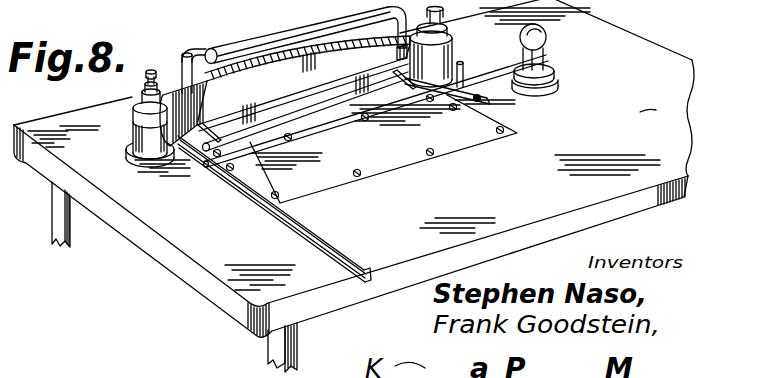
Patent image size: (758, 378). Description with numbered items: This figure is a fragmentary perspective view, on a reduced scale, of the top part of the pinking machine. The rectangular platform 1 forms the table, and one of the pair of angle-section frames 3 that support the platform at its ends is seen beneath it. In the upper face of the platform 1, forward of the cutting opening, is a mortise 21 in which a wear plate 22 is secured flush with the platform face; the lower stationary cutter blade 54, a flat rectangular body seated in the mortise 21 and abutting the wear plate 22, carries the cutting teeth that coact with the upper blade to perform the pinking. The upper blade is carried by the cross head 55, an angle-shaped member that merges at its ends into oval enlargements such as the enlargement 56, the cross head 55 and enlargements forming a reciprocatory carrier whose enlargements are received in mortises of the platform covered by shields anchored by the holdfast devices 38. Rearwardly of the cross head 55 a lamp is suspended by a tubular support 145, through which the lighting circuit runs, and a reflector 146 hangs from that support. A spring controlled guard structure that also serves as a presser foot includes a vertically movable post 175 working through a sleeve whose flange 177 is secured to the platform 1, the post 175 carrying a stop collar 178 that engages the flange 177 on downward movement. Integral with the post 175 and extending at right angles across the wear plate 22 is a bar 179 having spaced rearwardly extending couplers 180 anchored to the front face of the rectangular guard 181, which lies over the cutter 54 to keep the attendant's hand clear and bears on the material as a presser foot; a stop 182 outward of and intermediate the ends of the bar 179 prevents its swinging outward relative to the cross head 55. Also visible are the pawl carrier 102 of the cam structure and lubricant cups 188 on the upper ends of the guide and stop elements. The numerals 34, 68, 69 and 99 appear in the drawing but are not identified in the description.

The rectangular platform 1 is at (634, 47).
The frame 3 is at (58, 234).
The mortise 21 is at (500, 122).
The wear plate 22 is at (477, 139).
The slide block 34 is at (164, 102).
The holdfast devices 38 is at (132, 133).
The lower stationary cutter blade 54 is at (333, 122).
The cross head 55 is at (330, 50).
The oval-shaped enlargement 56 is at (184, 56).
The nut 68 is at (144, 96).
The collar 69 is at (141, 108).
The pinion 99 is at (183, 6).
The clutching member or pawl carrier 102 is at (89, 21).
The tubular support 145 is at (222, 34).
The reflector 146 is at (273, 42).
The vertically movable post 175 is at (547, 36).
The flange 177 is at (557, 72).
The stop collar 178 is at (547, 57).
The bar 179 is at (265, 131).
The couplers 180 is at (199, 142).
The rectangular guard 181 is at (300, 97).
The stop 182 is at (447, 67).
The lubricant cups 188 is at (146, 84).